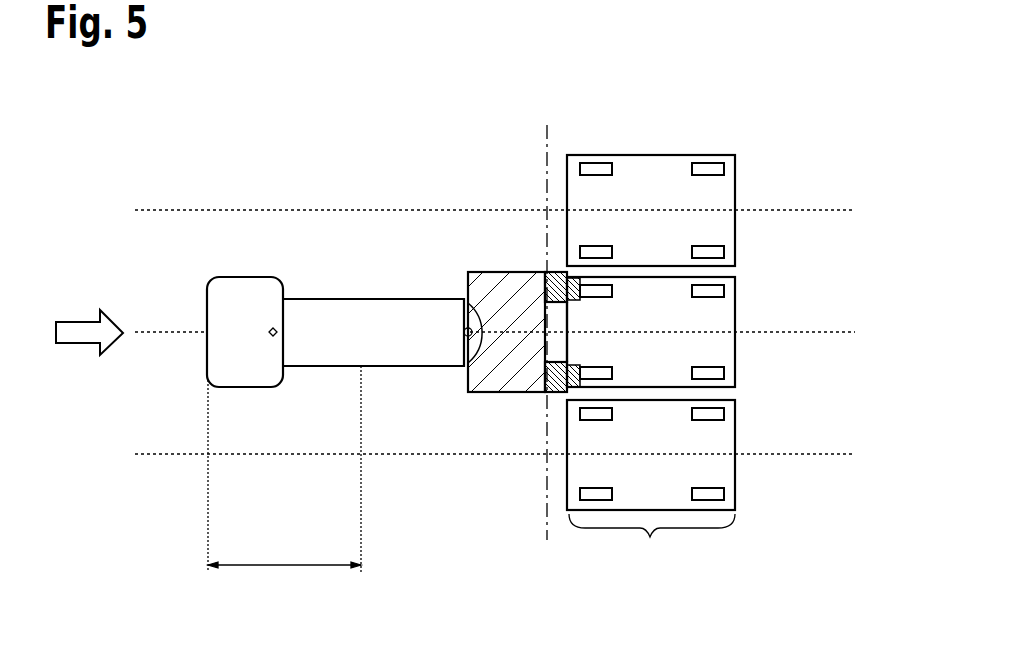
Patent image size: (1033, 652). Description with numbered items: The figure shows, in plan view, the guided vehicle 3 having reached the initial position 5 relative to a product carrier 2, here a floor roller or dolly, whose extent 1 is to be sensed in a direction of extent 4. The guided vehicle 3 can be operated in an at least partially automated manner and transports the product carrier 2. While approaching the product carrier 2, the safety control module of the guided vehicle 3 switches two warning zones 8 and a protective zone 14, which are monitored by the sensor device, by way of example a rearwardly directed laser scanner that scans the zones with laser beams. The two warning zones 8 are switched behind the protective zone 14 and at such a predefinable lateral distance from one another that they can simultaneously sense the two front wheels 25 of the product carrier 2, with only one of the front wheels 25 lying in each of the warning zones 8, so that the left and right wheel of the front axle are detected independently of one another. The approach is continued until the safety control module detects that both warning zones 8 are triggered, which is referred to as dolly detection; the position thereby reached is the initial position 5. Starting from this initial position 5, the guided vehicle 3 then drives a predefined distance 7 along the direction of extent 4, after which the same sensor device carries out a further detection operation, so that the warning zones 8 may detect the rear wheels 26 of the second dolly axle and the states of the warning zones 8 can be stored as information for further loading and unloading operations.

The extent 1 is at (652, 543).
The product carrier 2 is at (732, 180).
The guided vehicle 3 is at (107, 258).
The direction of extent 4 is at (70, 335).
The initial position 5 is at (205, 530).
The predefined distance 7 is at (291, 564).
The warning zones 8 is at (556, 282).
The protective zone 14 is at (483, 272).
The front wheels 25 is at (577, 288).
The rear wheels 26 is at (735, 293).